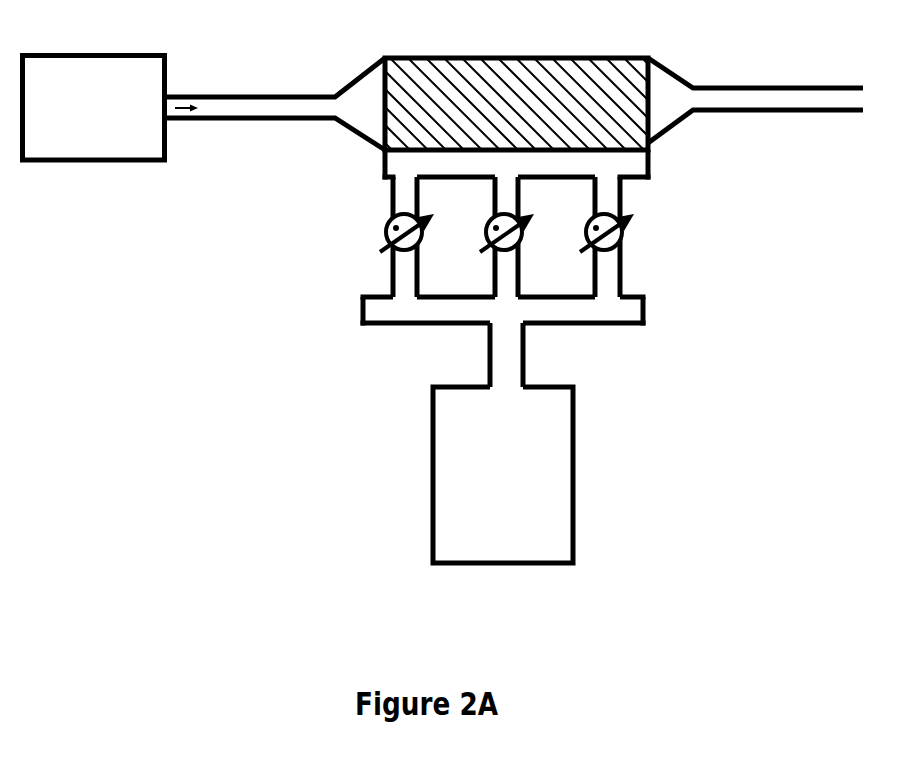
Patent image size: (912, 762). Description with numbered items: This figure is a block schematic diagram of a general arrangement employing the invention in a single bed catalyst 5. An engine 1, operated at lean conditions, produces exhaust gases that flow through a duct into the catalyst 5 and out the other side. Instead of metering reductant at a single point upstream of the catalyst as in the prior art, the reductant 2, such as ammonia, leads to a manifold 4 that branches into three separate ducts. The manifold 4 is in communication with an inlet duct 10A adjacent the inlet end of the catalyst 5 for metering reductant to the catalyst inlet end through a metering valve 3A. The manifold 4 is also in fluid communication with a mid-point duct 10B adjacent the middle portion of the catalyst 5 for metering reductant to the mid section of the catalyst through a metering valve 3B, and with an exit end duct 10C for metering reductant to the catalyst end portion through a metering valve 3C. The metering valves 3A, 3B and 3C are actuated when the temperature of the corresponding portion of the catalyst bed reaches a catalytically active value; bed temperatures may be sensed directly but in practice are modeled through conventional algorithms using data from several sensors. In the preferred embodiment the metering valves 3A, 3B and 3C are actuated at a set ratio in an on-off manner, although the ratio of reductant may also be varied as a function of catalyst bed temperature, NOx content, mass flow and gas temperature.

The engine 1 is at (75, 53).
The catalyst 5 is at (477, 58).
The metering valve 3A is at (387, 222).
The metering valve 3B is at (488, 225).
The metering valve 3C is at (622, 240).
The inlet duct 10A is at (392, 280).
The mid-point duct 10B is at (519, 266).
The exit end duct 10C is at (623, 277).
The manifold 4 is at (643, 310).
The reductant 2 is at (575, 490).